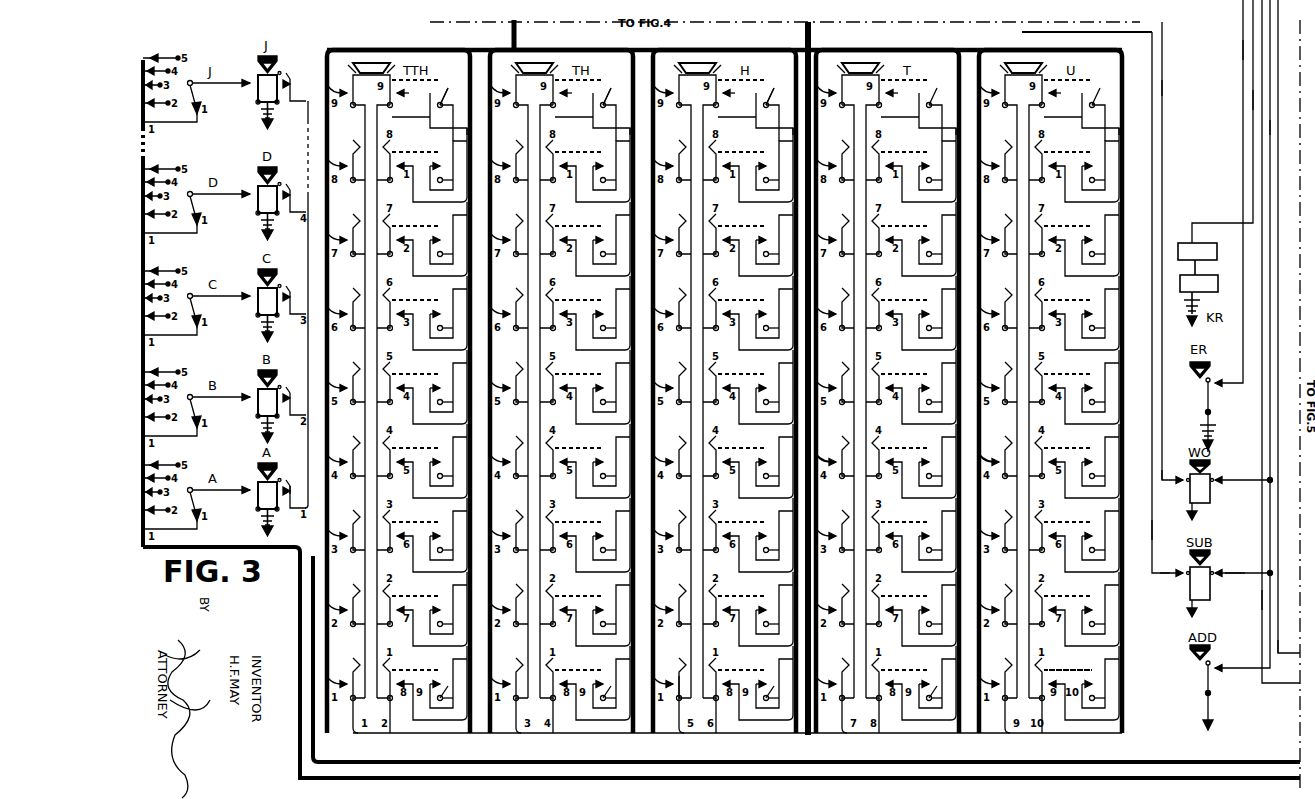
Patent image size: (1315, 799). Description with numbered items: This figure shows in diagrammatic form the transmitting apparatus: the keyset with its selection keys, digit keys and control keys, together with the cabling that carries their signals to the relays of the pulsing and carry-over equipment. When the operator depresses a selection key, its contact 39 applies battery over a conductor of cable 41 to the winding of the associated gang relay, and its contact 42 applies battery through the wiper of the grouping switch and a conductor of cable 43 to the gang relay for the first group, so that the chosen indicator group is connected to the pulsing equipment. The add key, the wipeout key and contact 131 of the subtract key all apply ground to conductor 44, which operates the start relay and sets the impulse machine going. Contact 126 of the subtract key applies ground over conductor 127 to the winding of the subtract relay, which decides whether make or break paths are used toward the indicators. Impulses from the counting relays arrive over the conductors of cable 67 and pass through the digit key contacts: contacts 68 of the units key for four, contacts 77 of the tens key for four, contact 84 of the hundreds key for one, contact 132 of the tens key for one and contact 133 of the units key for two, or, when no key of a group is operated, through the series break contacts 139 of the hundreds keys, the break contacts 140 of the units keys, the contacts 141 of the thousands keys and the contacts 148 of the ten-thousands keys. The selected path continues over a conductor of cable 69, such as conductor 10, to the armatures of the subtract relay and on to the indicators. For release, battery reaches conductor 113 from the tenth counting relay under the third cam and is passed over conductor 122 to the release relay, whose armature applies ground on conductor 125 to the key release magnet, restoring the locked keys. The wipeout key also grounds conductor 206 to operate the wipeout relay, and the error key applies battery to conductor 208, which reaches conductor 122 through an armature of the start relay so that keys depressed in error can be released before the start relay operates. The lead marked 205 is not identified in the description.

The conductor of cable 10 is at (300, 304).
The contact of selection key A 39 is at (290, 484).
The cable 41 is at (340, 763).
The contact of selection key A 42 is at (256, 490).
The cable 43 is at (300, 600).
The conductor 44 is at (1270, 128).
The cable 67 is at (500, 35).
The contacts of units digit key U4 68 is at (989, 452).
The cable 69 is at (810, 37).
The contacts of tens digit key T4 77 is at (826, 452).
The contact of hundreds digit key H1 84 is at (680, 690).
The conductor 113 is at (1300, 675).
The conductor 122 is at (1262, 600).
The conductor 125 is at (1253, 97).
The contact of key SUB 126 is at (1180, 578).
The conductor 127 is at (1153, 530).
The contact of key SUB 131 is at (1230, 578).
The contact of digit key T1 132 is at (913, 705).
The contact of key U2 133 is at (1050, 603).
The break contacts of digit keys H1 to H9 139 is at (763, 92).
The break contacts of keys U1 to U9 140 is at (1096, 677).
The contacts of digit keys TH1 to TH9 141 is at (604, 704).
The contacts of digit keys TTH1 to TTH9 148 is at (446, 704).
The write-out relay lead 205 is at (1166, 487).
The conductor 206 is at (1164, 89).
The conductor 208 is at (1243, 52).